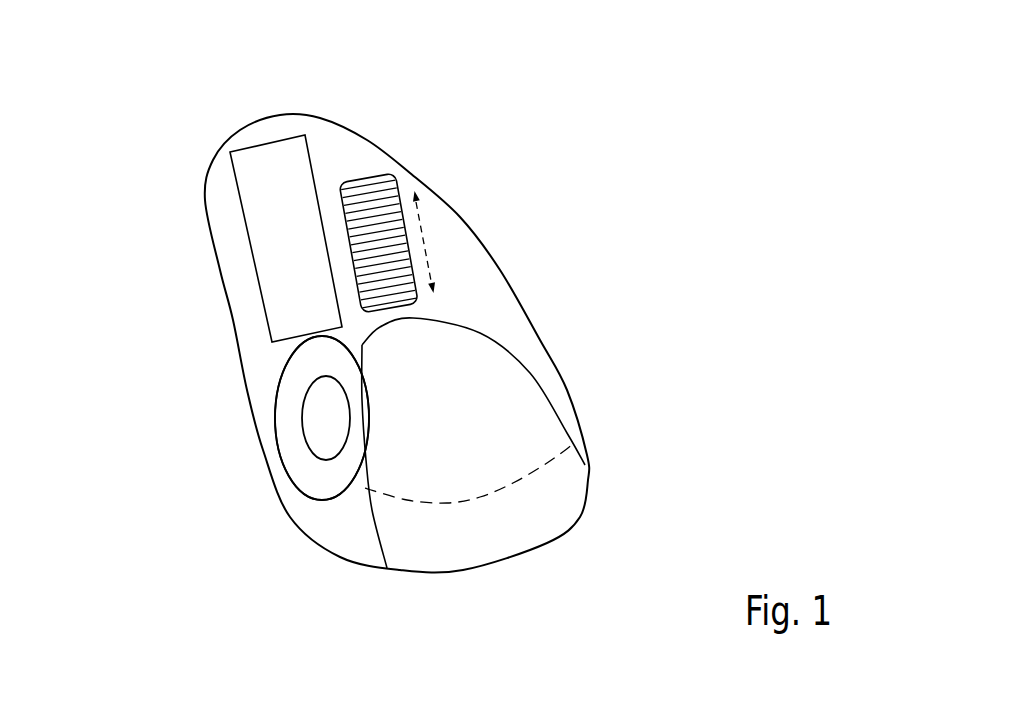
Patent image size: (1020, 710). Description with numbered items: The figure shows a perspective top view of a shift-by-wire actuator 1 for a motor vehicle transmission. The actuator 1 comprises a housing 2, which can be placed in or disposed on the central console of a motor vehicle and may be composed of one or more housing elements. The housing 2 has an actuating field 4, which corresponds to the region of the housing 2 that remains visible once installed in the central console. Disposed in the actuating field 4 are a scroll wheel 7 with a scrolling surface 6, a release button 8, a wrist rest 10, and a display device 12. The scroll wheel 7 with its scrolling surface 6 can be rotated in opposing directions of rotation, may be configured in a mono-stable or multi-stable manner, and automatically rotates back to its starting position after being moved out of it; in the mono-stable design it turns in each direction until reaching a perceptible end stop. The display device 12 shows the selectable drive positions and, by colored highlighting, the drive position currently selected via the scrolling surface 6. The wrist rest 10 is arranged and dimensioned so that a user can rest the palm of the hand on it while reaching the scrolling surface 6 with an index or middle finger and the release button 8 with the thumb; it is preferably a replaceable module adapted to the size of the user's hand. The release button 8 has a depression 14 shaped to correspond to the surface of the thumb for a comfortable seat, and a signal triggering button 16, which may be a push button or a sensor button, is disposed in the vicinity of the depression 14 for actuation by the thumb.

The shift-by-wire actuator 1 is at (187, 147).
The housing 2 is at (362, 132).
The actuating field 4 is at (475, 295).
The scrolling surface 6 is at (400, 180).
The scroll wheel 7 is at (416, 213).
The release button 8 is at (297, 448).
The wrist rest 10 is at (535, 508).
The display device 12 is at (277, 295).
The depression 14 is at (308, 477).
The signal triggering button 16 is at (317, 417).